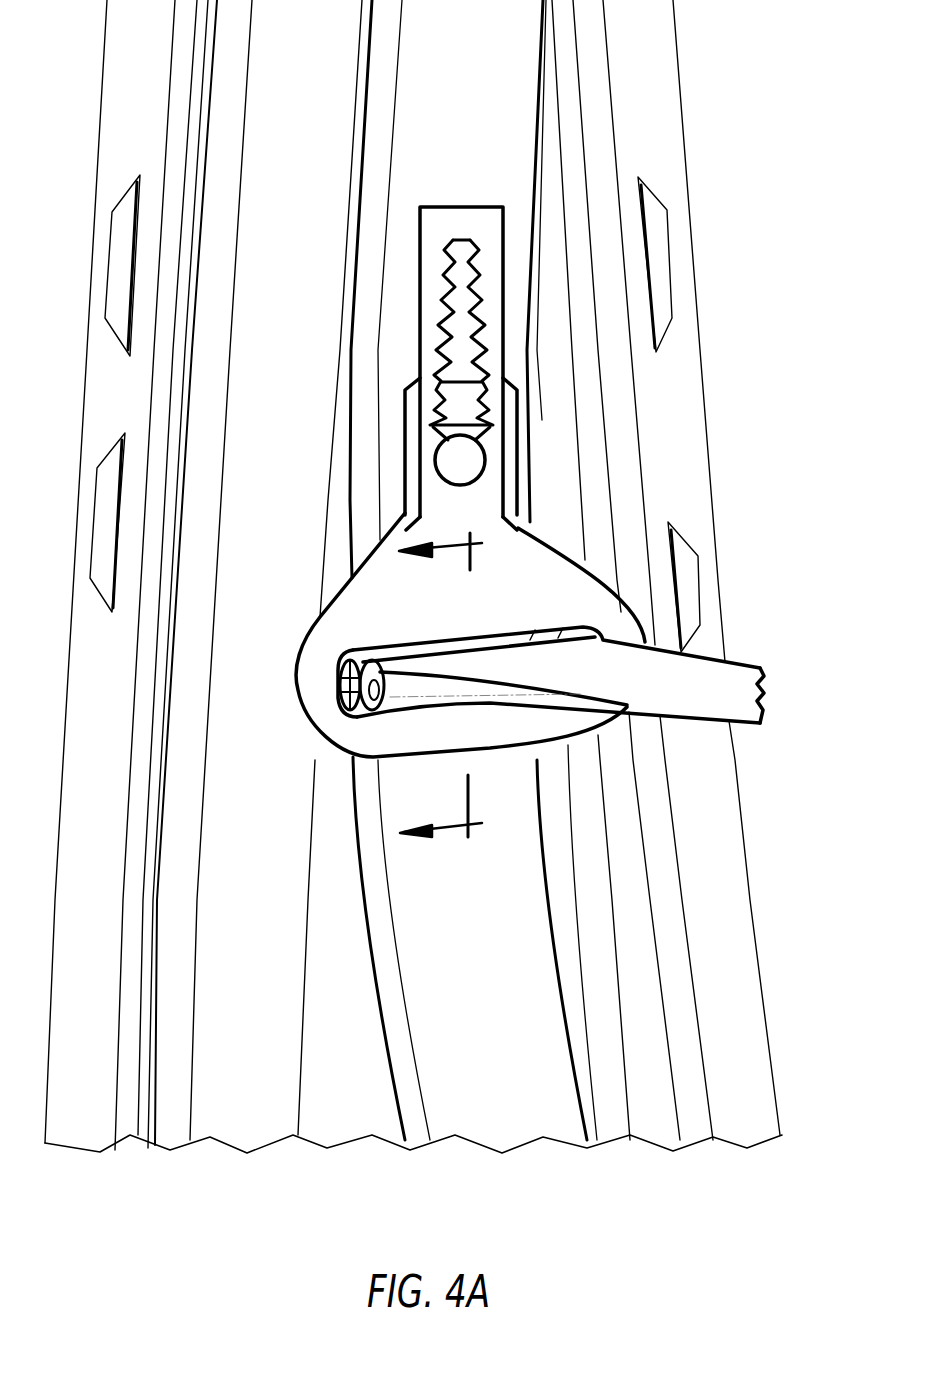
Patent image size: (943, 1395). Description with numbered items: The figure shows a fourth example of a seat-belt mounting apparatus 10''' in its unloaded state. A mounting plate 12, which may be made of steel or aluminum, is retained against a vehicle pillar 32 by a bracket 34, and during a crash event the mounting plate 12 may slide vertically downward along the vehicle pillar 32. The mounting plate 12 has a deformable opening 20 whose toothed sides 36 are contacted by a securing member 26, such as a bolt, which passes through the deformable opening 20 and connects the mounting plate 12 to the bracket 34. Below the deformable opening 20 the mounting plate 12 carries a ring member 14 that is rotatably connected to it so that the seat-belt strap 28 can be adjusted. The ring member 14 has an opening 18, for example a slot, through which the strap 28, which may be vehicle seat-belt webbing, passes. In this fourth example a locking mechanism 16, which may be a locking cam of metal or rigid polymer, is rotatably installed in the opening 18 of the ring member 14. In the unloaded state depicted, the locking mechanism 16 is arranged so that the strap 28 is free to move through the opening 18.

The apparatus 10''' is at (529, 439).
The mounting plate 12 is at (481, 213).
The ring member 14 is at (385, 610).
The locking mechanism 16 is at (405, 692).
The opening 18 is at (345, 712).
The deformable opening 20 is at (463, 278).
The securing member 26 is at (465, 465).
The strap 28 is at (707, 683).
The vehicle pillar 32 is at (487, 48).
The bracket 34 is at (523, 388).
The toothed sides 36 is at (478, 265).